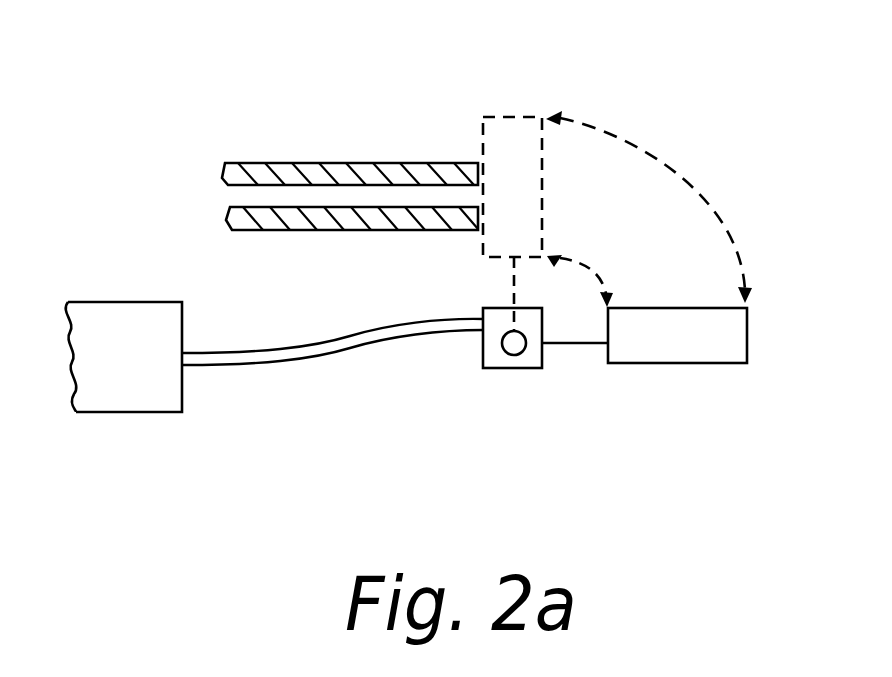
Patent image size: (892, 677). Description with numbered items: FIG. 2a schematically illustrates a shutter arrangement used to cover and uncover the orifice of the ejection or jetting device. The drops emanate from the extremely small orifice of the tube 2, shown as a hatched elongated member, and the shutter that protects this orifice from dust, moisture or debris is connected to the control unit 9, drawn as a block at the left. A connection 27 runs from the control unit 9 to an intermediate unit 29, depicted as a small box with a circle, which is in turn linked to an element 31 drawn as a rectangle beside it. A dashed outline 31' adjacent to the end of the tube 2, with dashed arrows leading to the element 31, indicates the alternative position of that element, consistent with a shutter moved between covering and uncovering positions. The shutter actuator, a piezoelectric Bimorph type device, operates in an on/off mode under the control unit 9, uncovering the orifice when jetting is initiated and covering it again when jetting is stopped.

The tube 2 is at (287, 163).
The control unit 9 is at (98, 302).
The signal line 27 is at (300, 354).
The sensor unit 29 is at (518, 368).
The control unit 31 is at (706, 379).
The alternative control unit position 31' is at (602, 155).